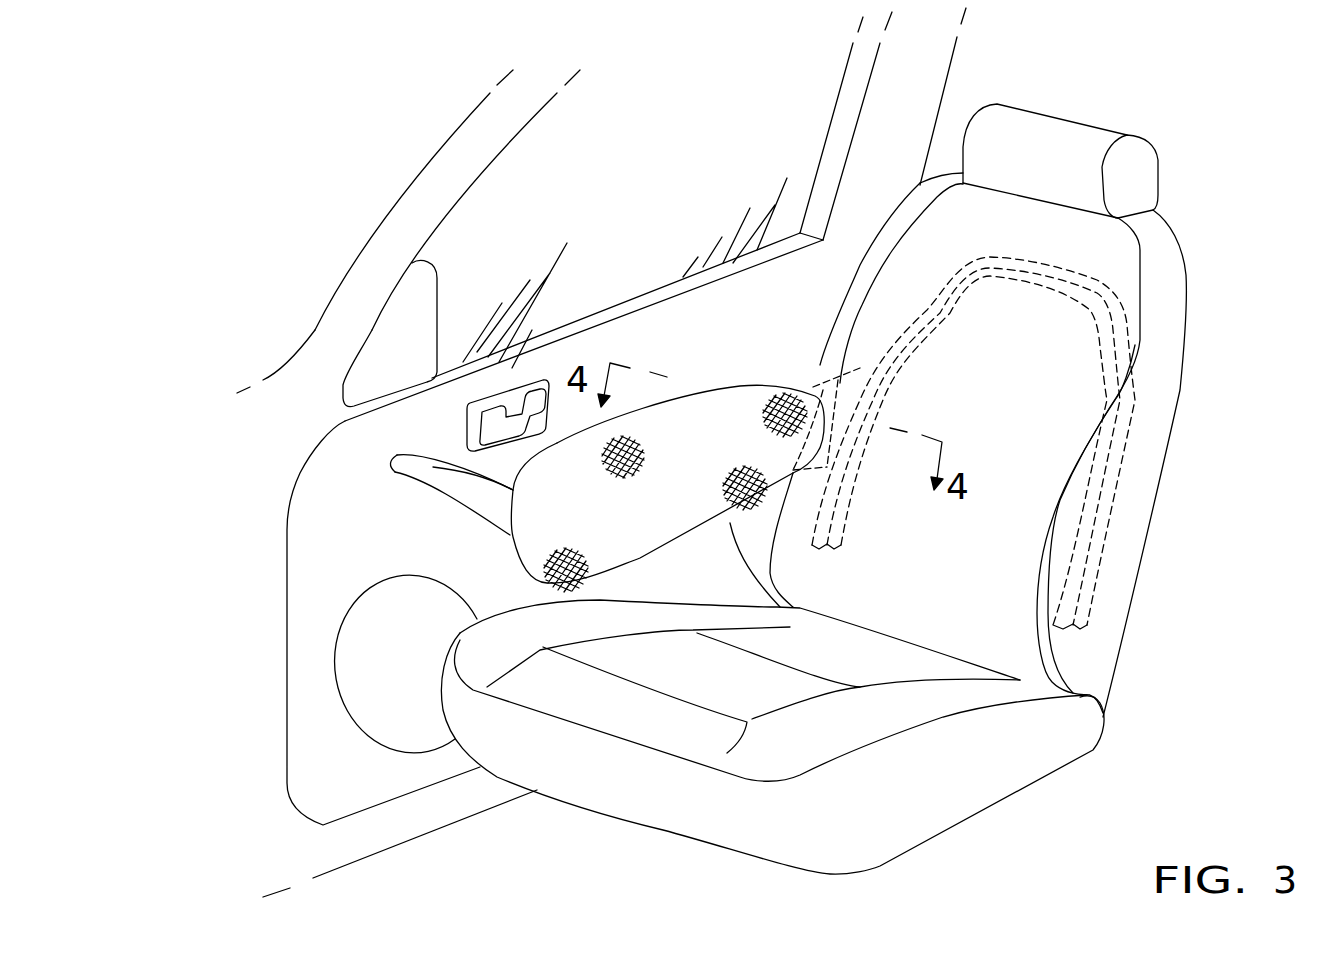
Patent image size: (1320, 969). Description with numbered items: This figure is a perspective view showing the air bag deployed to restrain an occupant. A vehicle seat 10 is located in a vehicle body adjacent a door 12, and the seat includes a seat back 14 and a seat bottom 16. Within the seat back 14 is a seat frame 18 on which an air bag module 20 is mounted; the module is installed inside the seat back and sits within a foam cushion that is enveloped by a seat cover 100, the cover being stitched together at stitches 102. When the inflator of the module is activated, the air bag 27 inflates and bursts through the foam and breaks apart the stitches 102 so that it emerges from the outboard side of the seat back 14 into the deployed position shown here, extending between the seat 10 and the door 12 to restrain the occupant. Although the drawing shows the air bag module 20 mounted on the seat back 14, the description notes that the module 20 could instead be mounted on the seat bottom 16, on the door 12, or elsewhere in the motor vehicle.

The vehicle seat 10 is at (866, 489).
The door 12 is at (292, 527).
The seat back 14 is at (1009, 410).
The seat bottom 16 is at (948, 802).
The seat frame 18 is at (1107, 500).
The air bag module 20 is at (840, 378).
The air bag 27 is at (700, 415).
The seat cover 100 is at (1125, 270).
The stitches 102 is at (845, 352).